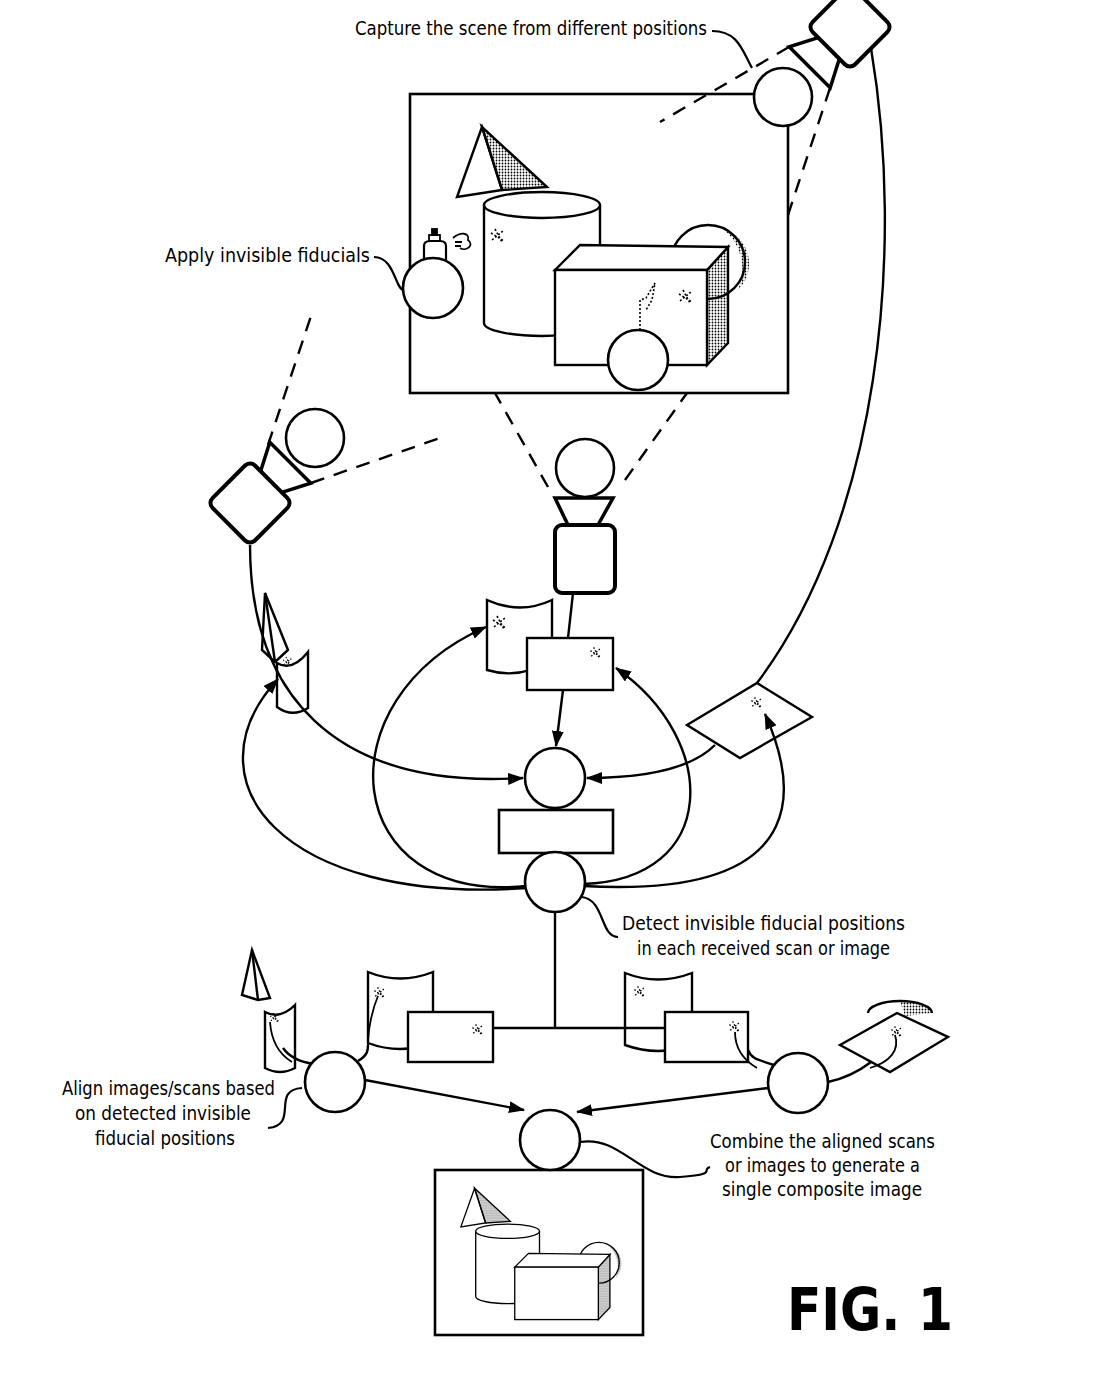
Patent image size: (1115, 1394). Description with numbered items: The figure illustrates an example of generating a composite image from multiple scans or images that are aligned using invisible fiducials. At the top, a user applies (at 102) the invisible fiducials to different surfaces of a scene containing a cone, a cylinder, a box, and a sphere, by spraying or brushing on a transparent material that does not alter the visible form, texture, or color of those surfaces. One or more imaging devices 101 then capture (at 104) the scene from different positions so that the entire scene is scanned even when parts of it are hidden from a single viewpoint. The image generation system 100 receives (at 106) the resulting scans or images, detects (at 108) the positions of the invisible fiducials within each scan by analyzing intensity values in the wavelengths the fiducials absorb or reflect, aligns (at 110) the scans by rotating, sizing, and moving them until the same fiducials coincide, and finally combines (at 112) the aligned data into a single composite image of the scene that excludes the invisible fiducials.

The image generation system 100 is at (541, 841).
The imaging device 101 is at (835, 37).
The applying the invisible fiducials 102 is at (418, 298).
The capturing the scene from different positions 104 is at (768, 107).
The receiving the scans or images 106 is at (540, 788).
The detecting the invisible fiducial positions 108 is at (540, 892).
The aligning the scans or images 110 is at (320, 1092).
The combining the aligned scans or images 112 is at (535, 1150).